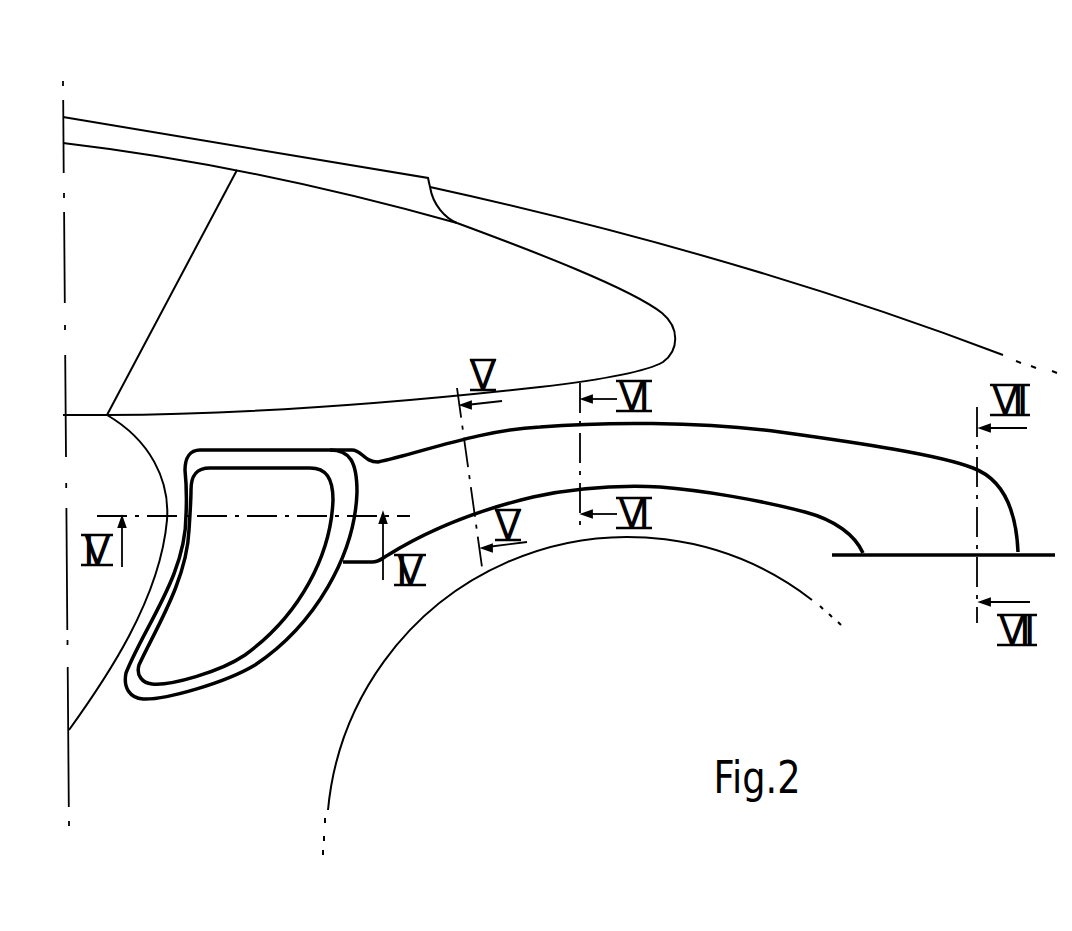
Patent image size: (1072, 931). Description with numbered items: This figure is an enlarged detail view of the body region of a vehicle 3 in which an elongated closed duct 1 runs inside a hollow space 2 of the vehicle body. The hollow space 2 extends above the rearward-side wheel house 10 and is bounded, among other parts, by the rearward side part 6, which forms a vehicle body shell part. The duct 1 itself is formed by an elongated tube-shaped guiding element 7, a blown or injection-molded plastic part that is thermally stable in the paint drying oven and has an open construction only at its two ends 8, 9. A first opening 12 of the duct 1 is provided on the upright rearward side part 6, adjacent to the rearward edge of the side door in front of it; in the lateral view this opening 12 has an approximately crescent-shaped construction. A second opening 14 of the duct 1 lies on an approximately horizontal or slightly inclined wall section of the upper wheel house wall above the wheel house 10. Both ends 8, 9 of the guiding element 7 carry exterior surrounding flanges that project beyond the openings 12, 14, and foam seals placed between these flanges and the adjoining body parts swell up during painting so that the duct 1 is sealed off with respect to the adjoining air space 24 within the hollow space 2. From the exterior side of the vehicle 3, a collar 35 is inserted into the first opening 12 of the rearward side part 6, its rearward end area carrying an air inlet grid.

The duct 1 is at (674, 458).
The hollow space 2 is at (407, 319).
The vehicle 3 is at (397, 151).
The rearward side part 6 is at (582, 696).
The tube-shaped guiding element 7 is at (876, 441).
The end of the guiding element 8 is at (224, 620).
The end of the guiding element 9 is at (943, 617).
The rearward-side wheel house 10 is at (556, 560).
The first opening 12 is at (220, 487).
The second opening 14 is at (876, 557).
The air space 24 is at (179, 587).
The collar 35 is at (160, 690).